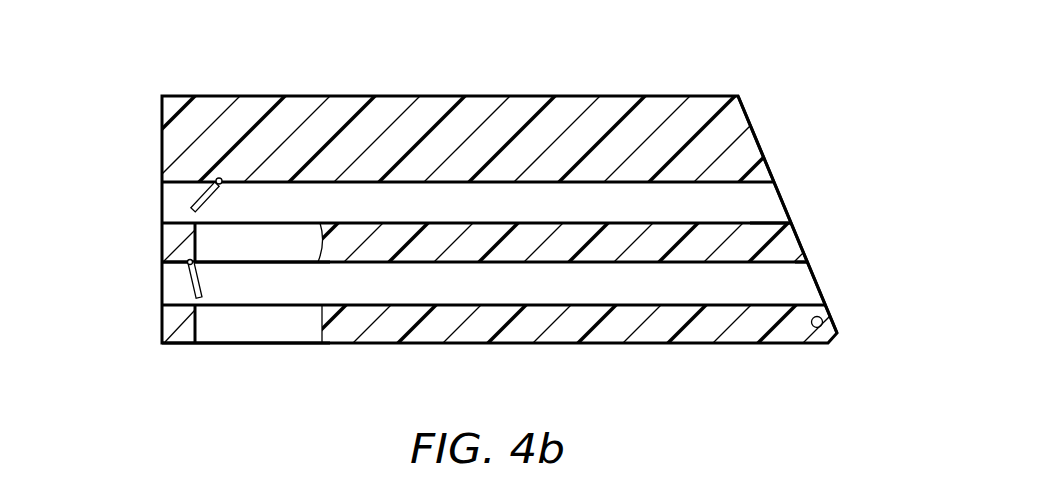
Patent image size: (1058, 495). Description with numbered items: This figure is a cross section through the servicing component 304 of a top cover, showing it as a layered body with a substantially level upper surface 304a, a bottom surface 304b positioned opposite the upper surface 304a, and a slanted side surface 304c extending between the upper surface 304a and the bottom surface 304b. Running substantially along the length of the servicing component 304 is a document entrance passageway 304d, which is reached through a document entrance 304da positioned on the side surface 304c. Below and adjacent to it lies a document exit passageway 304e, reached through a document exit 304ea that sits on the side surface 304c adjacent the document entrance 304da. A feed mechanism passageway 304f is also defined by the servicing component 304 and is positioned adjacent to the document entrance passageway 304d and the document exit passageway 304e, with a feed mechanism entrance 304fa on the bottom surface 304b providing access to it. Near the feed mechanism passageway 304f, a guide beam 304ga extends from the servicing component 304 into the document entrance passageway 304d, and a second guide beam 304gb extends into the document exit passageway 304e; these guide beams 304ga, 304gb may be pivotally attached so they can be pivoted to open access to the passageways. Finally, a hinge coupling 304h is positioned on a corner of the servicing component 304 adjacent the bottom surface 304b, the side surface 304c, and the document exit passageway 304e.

The servicing component 304 is at (585, 88).
The upper surface 304a is at (398, 94).
The bottom surface 304b is at (560, 344).
The side surface 304c is at (759, 145).
The document entrance passageway 304d is at (786, 194).
The document entrance 304da is at (771, 222).
The document exit passageway 304e is at (821, 273).
The document exit 304ea is at (822, 297).
The feed mechanism passageway 304f is at (304, 352).
The feed mechanism entrance 304fa is at (198, 336).
The guide beam 304ga is at (190, 198).
The guide beam 304gb is at (192, 291).
The hinge coupling 304h is at (813, 328).